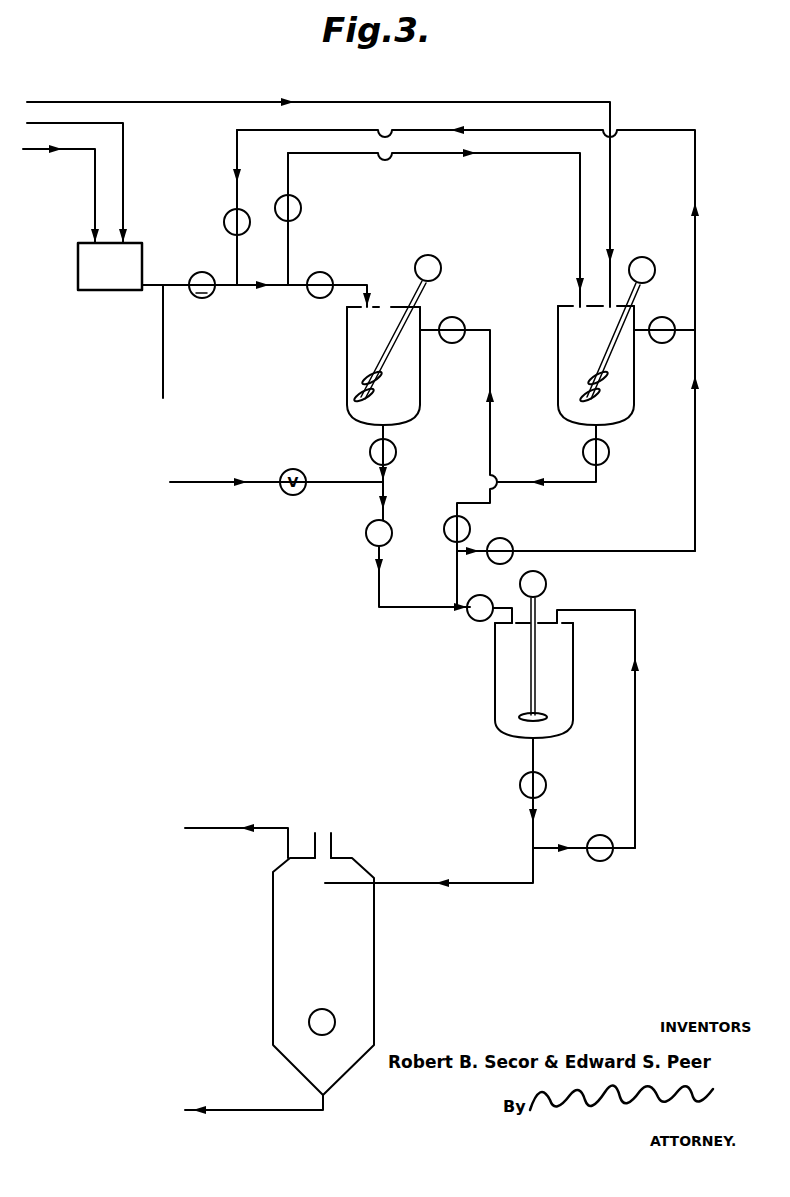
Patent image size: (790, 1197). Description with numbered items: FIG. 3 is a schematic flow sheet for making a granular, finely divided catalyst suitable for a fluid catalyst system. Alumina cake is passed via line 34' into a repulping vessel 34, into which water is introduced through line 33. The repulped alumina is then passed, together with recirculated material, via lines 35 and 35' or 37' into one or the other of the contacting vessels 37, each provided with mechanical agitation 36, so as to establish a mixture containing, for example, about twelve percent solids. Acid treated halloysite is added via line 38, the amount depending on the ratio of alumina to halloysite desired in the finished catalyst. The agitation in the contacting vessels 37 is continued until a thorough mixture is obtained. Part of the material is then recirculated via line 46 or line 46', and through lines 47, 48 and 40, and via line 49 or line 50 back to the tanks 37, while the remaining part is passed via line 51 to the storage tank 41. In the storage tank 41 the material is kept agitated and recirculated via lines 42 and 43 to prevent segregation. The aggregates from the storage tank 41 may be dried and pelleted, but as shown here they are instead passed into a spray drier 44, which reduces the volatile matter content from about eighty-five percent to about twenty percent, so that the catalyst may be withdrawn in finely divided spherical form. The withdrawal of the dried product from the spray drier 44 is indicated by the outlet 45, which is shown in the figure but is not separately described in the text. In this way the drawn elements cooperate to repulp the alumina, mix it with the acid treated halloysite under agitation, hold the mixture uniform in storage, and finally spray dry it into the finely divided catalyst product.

The water inlet line 33 is at (43, 152).
The repulping vessel 34 is at (110, 266).
The alumina cake feed line 34' is at (100, 183).
The transfer line 35 is at (256, 335).
The transfer line 35' is at (429, 228).
The mechanical agitation 36 is at (359, 402).
The contacting vessel 37 is at (466, 365).
The transfer line 37' is at (395, 293).
The halloysite feed line 38 is at (127, 102).
The recirculation line 40 is at (696, 414).
The storage tank 41 is at (495, 695).
The recirculation line 42 is at (535, 757).
The recirculation line 43 is at (636, 690).
The spray drier 44 is at (376, 936).
The product outlet line 45 is at (261, 1109).
The recirculation line 46 is at (400, 472).
The recirculation line 46' is at (573, 455).
The recirculation line 47 is at (379, 584).
The recirculation line 48 is at (457, 579).
The return line 49 is at (646, 333).
The return line 50 is at (236, 157).
The transfer line 51 is at (508, 606).